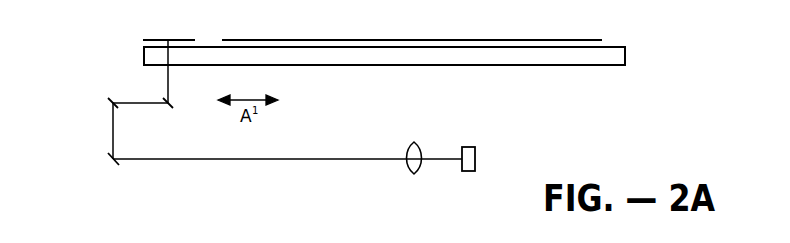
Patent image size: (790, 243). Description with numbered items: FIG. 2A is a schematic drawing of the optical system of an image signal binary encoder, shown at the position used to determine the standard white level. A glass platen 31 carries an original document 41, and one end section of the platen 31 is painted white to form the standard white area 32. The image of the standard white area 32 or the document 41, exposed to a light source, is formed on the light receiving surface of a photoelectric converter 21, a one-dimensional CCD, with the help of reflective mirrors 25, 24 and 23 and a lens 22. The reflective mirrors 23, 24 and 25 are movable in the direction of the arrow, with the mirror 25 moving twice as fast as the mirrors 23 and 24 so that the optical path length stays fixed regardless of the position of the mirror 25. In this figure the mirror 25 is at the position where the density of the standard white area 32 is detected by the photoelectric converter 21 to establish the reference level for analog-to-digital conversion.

The photoelectric converter 21 is at (475, 152).
The lens 22 is at (410, 168).
The reflective mirror 23 is at (115, 162).
The reflective mirror 24 is at (113, 103).
The reflective mirror 25 is at (168, 105).
The glass platen 31 is at (626, 48).
The standard white area 32 is at (160, 40).
The original document 41 is at (523, 40).